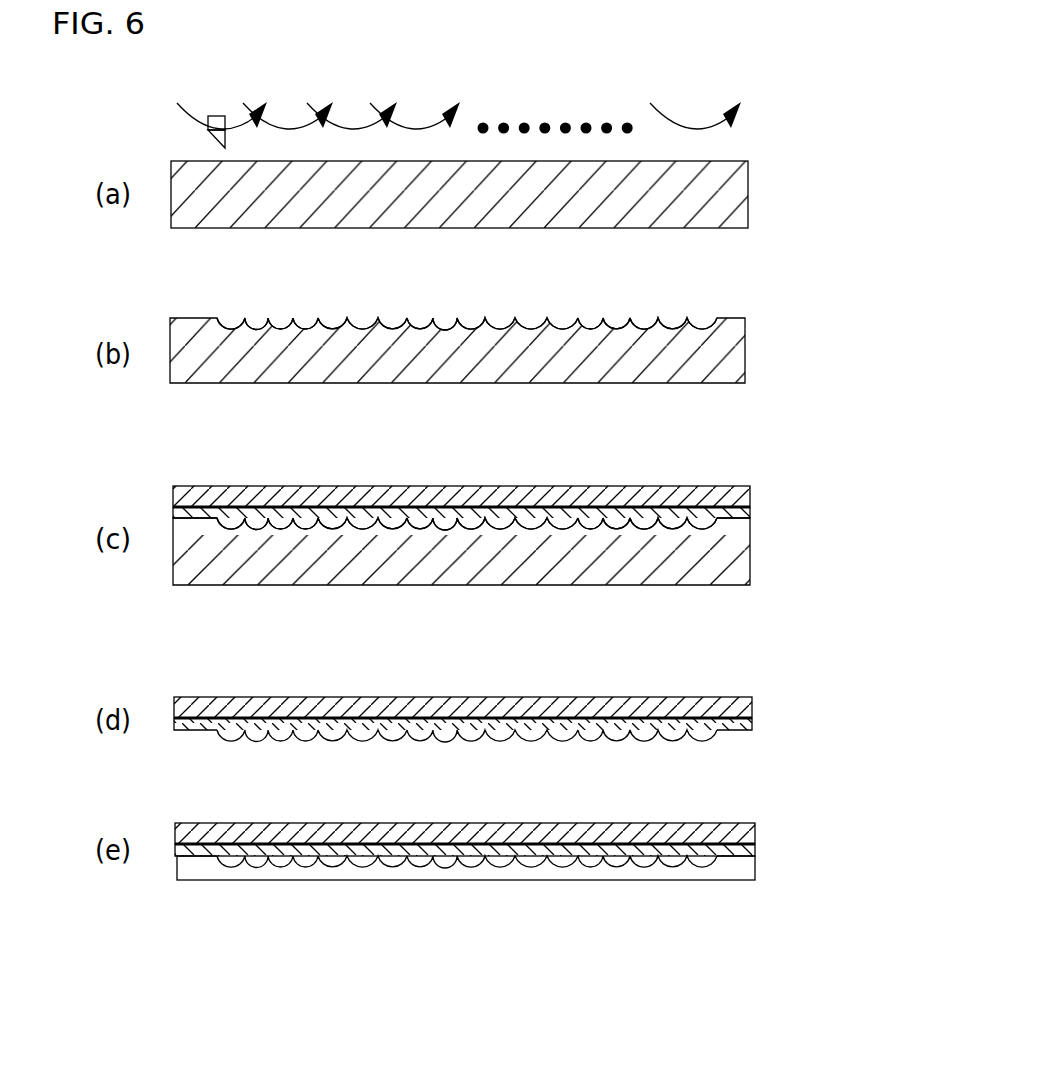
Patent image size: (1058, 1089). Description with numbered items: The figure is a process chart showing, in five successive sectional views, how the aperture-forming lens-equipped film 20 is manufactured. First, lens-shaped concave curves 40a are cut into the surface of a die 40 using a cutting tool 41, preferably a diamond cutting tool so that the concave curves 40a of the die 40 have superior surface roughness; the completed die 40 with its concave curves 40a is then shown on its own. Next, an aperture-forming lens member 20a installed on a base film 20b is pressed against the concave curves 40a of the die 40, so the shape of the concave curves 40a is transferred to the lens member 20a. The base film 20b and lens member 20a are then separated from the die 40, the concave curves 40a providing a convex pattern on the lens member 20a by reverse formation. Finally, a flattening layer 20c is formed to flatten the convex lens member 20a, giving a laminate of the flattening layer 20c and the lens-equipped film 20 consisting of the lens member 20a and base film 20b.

The aperture-forming lens-equipped film 20 is at (556, 690).
The aperture-forming lens member 20a is at (700, 520).
The base film 20b is at (745, 486).
The flattening layer 20c is at (727, 872).
The die 40 is at (728, 197).
The lens-shaped concave curves 40a is at (262, 318).
The cutting tool 41 is at (210, 116).